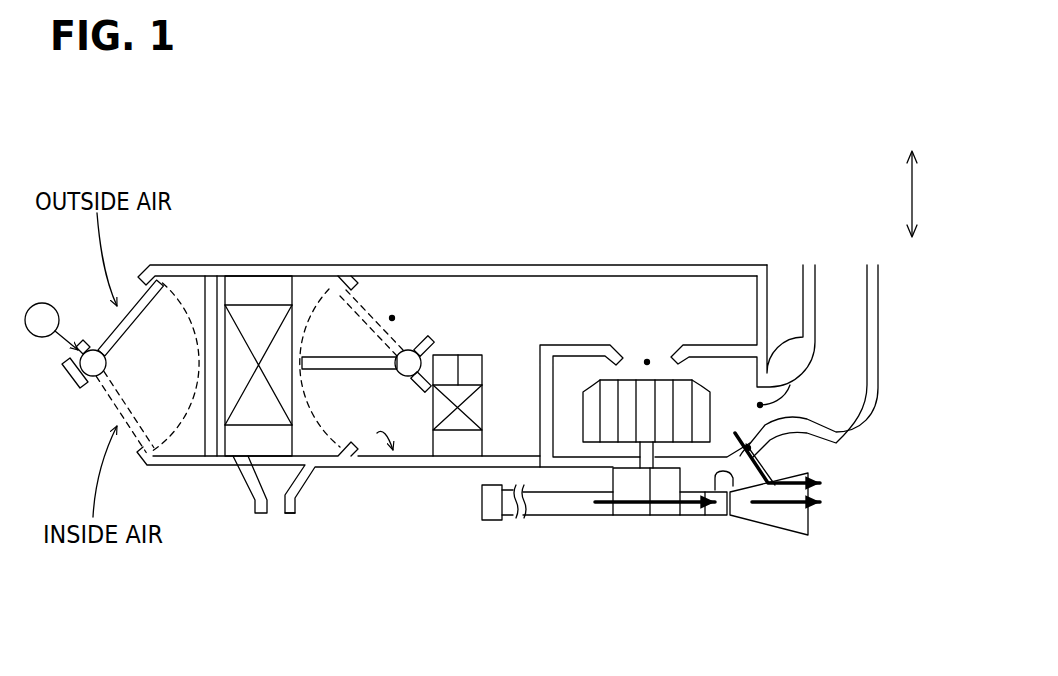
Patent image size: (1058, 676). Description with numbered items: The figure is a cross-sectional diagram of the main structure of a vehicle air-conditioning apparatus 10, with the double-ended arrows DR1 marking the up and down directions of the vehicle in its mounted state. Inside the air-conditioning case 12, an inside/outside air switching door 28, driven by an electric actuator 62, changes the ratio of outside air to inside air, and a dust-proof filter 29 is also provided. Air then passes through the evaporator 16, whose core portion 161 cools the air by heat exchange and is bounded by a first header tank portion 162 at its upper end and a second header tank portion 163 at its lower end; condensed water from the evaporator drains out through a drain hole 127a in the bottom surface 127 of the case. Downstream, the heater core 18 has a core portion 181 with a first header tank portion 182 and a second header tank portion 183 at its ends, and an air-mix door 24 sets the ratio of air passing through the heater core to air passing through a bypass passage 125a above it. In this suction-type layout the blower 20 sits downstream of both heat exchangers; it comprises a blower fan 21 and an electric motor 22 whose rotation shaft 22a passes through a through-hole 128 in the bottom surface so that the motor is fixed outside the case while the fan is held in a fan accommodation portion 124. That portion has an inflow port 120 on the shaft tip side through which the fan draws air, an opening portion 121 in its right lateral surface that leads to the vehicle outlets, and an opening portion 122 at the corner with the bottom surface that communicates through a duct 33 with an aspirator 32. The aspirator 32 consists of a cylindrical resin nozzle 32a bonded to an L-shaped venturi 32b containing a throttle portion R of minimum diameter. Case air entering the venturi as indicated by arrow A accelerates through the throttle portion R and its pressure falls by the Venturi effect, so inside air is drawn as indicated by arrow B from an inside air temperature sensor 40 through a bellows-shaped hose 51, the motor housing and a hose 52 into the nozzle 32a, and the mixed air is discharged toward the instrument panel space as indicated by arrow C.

The vehicle air-conditioning apparatus 10 is at (767, 210).
The air-conditioning case 12 is at (562, 263).
The evaporator 16 is at (255, 356).
The heater core 18 is at (472, 352).
The blower 20 is at (628, 354).
The blower fan 21 is at (648, 393).
The electric motor 22 is at (613, 520).
The rotation shaft 22a is at (673, 517).
The air-mix door 24 is at (342, 358).
The inside/outside air switching door 28 is at (110, 332).
The dust-proof filter 29 is at (203, 417).
The aspirator 32 is at (783, 539).
The nozzle 32a is at (727, 517).
The venturi 32b is at (810, 537).
The duct 33 is at (770, 460).
The inside air temperature sensor 40 is at (493, 521).
The hose 51 is at (540, 520).
The hose 52 is at (690, 517).
The electric actuator 62 is at (42, 302).
The inflow port 120 is at (647, 362).
The opening portion 121 is at (790, 350).
The opening portion 122 is at (850, 435).
The fan accommodation portion 124 is at (722, 347).
The bypass passage 125a is at (392, 318).
The bottom surface 127 is at (373, 442).
The drain hole 127a is at (265, 515).
The through-hole 128 is at (655, 485).
The core portion 161 is at (260, 317).
The first header tank portion 162 is at (237, 287).
The second header tank portion 163 is at (243, 447).
The core portion 181 is at (458, 367).
The first header tank portion 182 is at (445, 367).
The second header tank portion 183 is at (452, 447).
The arrow A is at (817, 483).
The arrow B is at (705, 517).
The arrow C is at (810, 518).
The throttle portion R is at (757, 517).
The up and down arrows DR1 is at (910, 190).